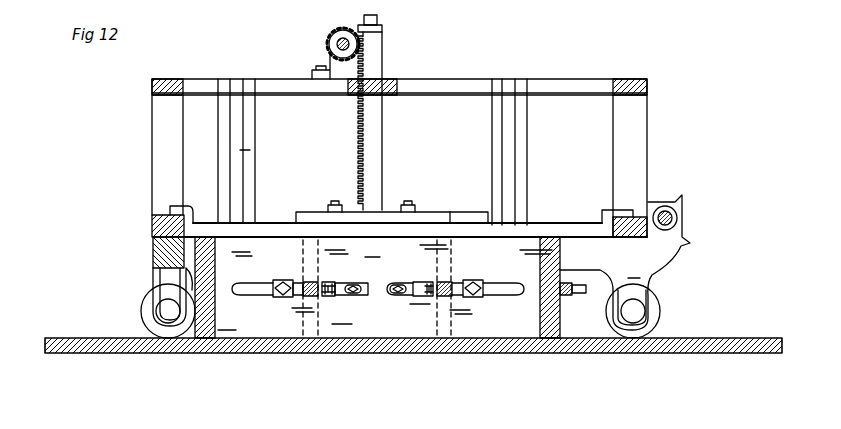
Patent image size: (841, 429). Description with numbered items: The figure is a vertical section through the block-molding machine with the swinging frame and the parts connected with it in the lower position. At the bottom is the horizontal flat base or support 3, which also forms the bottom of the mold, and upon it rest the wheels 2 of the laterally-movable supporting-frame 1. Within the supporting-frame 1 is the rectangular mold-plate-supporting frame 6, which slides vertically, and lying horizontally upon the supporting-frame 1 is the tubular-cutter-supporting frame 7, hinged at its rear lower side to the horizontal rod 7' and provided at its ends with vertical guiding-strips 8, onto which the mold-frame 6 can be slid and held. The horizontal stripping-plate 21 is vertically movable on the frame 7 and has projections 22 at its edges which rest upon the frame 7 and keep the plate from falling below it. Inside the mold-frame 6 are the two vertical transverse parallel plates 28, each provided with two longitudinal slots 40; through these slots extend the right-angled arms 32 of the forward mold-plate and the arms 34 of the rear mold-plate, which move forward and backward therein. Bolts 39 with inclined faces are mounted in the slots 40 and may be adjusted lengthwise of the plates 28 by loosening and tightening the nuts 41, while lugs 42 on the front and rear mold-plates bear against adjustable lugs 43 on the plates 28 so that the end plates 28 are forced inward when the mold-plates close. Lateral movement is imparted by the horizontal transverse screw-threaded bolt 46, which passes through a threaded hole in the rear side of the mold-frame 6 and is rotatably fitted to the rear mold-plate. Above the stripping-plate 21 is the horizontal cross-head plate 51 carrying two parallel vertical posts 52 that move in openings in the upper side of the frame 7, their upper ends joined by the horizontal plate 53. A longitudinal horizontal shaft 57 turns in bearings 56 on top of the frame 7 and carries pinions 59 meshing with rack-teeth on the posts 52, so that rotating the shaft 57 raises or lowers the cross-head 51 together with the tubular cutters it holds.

The supporting-frame 1 is at (625, 262).
The wheels 2 is at (652, 323).
The base or support 3 is at (413, 334).
The mold-plate-supporting frame 6 is at (561, 259).
The tubular-cutter-supporting frame 7 is at (399, 149).
The rod 7' is at (678, 216).
The vertical guiding-strips 8 is at (243, 150).
The stripping-plate 21 is at (551, 230).
The projections 22 is at (188, 205).
The vertical transverse parallel plates 28 is at (429, 291).
The right-angled arms 32 is at (305, 304).
The arms 34 is at (445, 281).
The bolts 39 is at (482, 266).
The longitudinal slots 40 is at (243, 297).
The nuts 41 is at (270, 282).
The lugs 42 is at (330, 297).
The adjustable lugs 43 is at (320, 280).
The screw-threaded bolt 46 is at (566, 297).
The cross-head plate 51 is at (439, 211).
The vertical posts 52 is at (383, 55).
The horizontal plate 53 is at (384, 26).
The bearings 56 is at (312, 76).
The shaft 57 is at (336, 44).
The pinions 59 is at (333, 30).